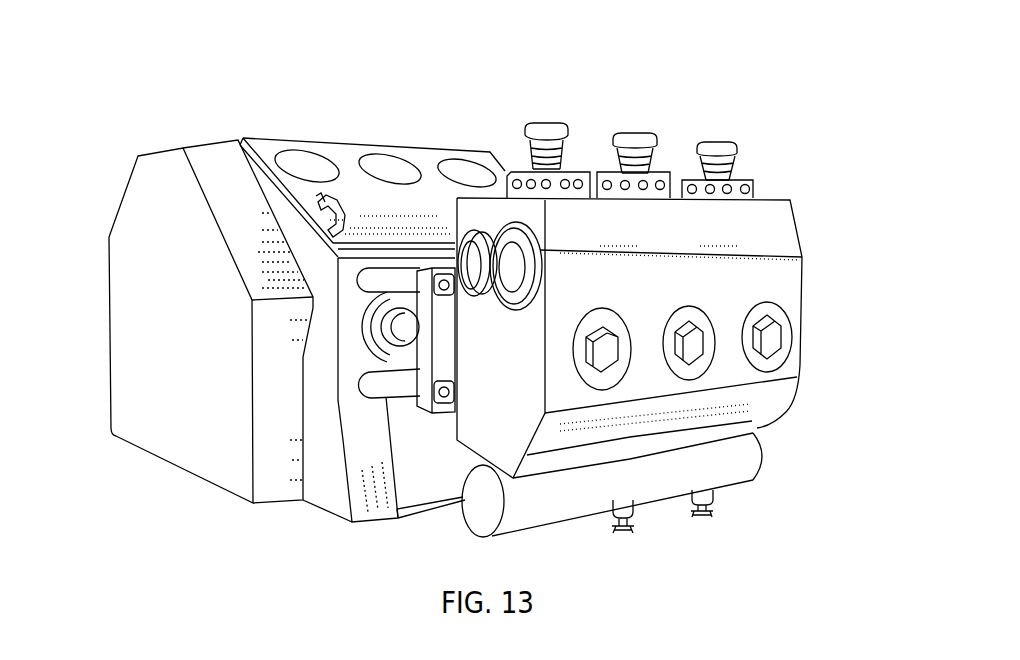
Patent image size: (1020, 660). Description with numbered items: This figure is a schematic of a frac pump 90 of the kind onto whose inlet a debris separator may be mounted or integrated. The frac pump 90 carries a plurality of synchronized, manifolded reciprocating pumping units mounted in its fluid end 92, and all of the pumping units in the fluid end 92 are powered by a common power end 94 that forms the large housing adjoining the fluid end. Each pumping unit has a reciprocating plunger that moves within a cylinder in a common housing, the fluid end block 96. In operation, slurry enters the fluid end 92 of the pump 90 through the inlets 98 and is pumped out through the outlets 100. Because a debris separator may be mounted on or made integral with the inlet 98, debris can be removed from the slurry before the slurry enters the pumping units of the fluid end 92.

The frac pump 90 is at (452, 290).
The fluid end 92 is at (803, 228).
The power end 94 is at (106, 313).
The fluid end block 96 is at (470, 373).
The inlet 98 is at (478, 507).
The outlet 100 is at (477, 253).